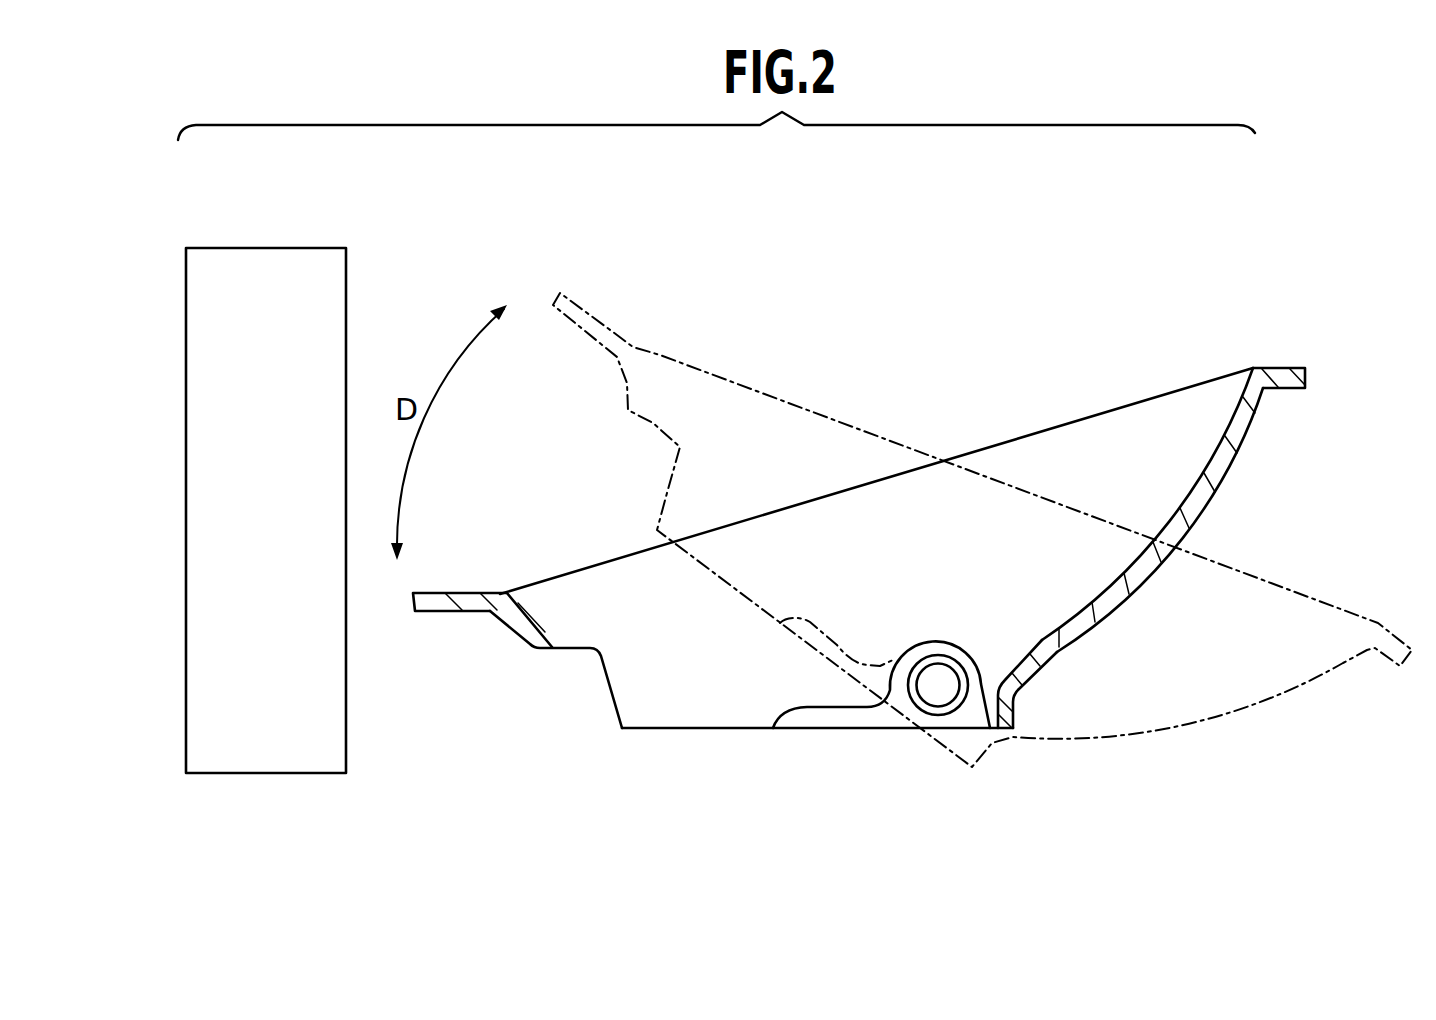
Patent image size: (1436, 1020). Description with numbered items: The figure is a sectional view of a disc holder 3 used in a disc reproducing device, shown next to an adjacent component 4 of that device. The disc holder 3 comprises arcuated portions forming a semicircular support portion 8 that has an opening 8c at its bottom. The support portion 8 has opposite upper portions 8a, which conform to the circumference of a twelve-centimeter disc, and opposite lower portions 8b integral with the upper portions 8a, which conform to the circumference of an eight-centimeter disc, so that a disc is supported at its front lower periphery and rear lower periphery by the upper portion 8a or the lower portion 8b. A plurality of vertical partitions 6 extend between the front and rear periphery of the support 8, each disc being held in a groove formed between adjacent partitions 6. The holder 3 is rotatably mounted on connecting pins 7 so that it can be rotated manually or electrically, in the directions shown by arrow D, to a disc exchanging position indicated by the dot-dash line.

The disc holder 3 is at (1332, 380).
The rotating unit 4 is at (278, 253).
The vertical partition 6 is at (1107, 427).
The connecting pin 7 is at (937, 670).
The semicircular support portion 8 is at (894, 610).
The upper portion 8a is at (516, 595).
The lower portion 8b is at (547, 632).
The opening 8c is at (715, 728).